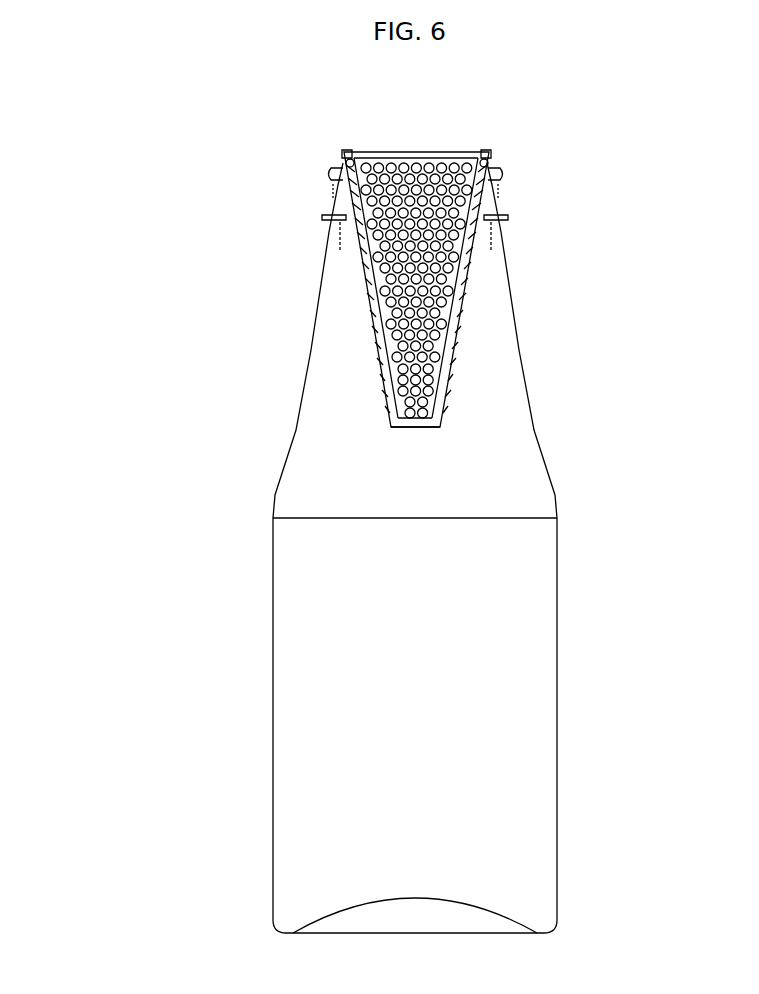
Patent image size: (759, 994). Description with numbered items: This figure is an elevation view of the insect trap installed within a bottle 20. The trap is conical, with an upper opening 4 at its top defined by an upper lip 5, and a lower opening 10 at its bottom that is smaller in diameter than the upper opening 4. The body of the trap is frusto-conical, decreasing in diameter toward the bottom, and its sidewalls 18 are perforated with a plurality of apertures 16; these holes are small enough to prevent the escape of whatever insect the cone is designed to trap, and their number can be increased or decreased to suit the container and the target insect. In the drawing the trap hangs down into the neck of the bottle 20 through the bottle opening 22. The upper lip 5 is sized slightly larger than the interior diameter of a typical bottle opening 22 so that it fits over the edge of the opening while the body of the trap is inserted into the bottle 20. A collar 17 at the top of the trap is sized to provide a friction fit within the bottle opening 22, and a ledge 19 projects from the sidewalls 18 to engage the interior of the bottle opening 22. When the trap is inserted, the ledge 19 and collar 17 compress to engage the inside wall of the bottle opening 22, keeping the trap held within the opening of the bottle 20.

The upper opening 4 is at (410, 154).
The upper lip 5 is at (485, 157).
The lower opening 10 is at (400, 421).
The apertures 16 is at (423, 311).
The collar 17 is at (488, 165).
The sidewalls 18 is at (480, 207).
The ledge 19 is at (346, 158).
The bottle 20 is at (272, 708).
The bottle opening 22 is at (338, 185).